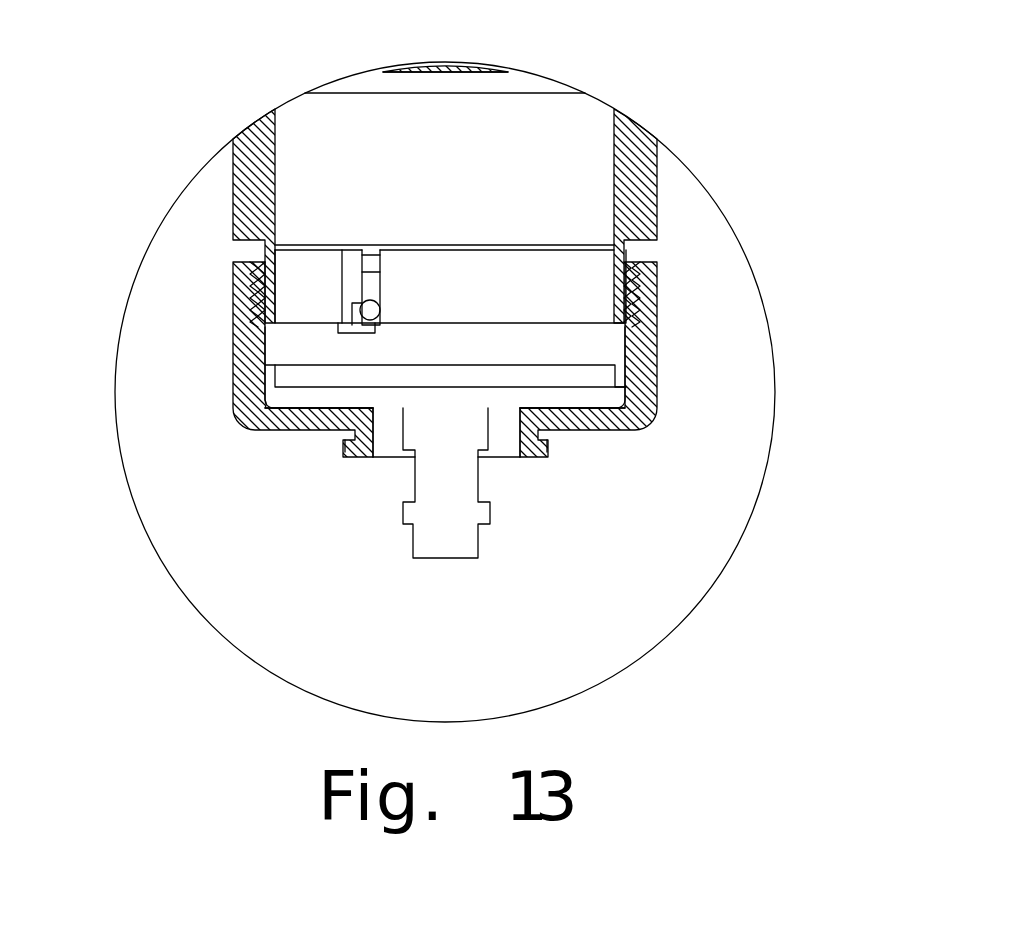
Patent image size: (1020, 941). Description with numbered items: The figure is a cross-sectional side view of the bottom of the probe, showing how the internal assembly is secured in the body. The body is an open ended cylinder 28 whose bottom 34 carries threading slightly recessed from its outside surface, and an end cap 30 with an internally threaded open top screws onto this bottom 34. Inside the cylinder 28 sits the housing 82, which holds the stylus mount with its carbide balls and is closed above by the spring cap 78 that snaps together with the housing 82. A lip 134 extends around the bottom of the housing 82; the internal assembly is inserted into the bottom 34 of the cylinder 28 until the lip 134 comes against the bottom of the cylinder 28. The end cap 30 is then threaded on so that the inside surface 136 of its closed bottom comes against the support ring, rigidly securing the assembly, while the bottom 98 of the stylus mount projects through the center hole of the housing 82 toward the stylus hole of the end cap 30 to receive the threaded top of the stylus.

The cylinder 28 is at (637, 160).
The spring cap 78 is at (587, 217).
The housing 82 is at (585, 297).
The bottom 34 is at (230, 258).
The lip 134 is at (238, 322).
The end cap 30 is at (658, 380).
The inside surface 136 is at (305, 408).
The bottom 98 is at (472, 540).